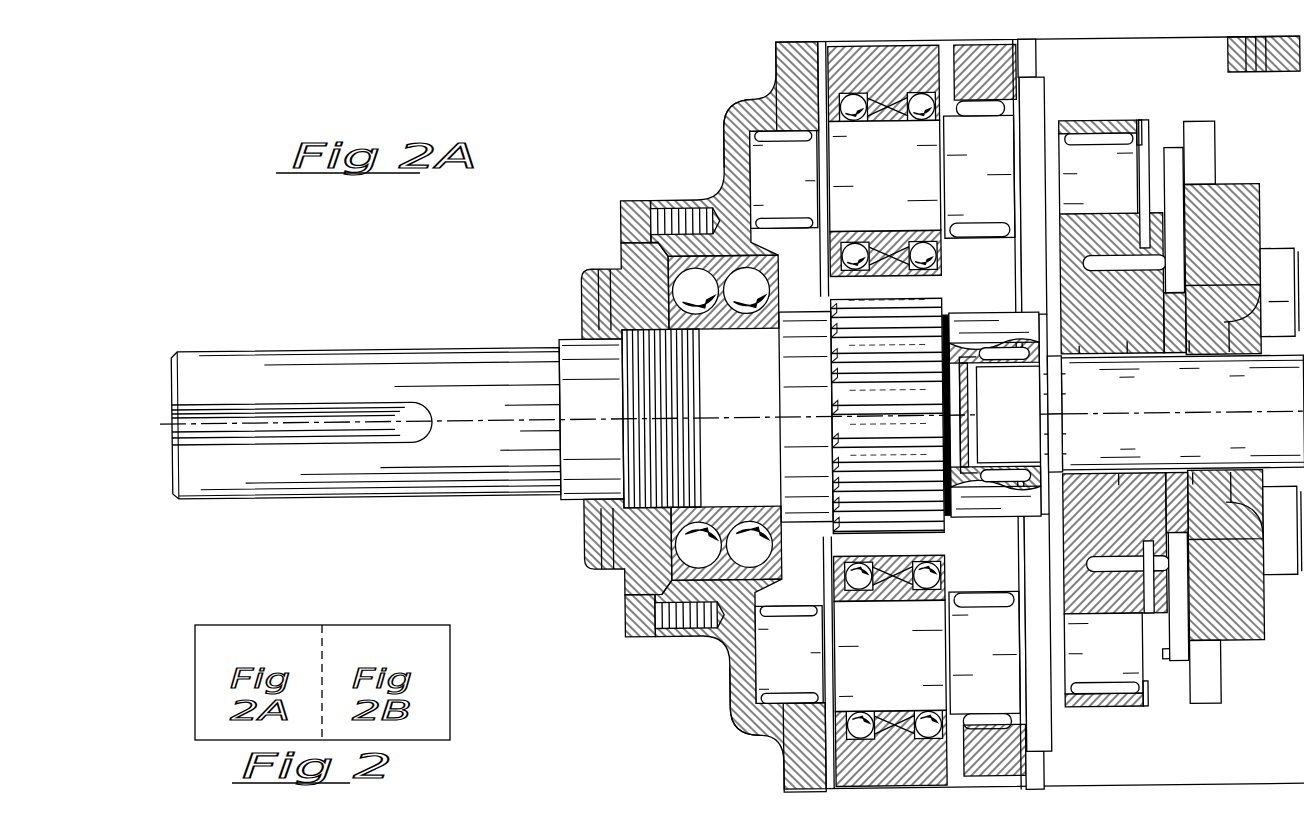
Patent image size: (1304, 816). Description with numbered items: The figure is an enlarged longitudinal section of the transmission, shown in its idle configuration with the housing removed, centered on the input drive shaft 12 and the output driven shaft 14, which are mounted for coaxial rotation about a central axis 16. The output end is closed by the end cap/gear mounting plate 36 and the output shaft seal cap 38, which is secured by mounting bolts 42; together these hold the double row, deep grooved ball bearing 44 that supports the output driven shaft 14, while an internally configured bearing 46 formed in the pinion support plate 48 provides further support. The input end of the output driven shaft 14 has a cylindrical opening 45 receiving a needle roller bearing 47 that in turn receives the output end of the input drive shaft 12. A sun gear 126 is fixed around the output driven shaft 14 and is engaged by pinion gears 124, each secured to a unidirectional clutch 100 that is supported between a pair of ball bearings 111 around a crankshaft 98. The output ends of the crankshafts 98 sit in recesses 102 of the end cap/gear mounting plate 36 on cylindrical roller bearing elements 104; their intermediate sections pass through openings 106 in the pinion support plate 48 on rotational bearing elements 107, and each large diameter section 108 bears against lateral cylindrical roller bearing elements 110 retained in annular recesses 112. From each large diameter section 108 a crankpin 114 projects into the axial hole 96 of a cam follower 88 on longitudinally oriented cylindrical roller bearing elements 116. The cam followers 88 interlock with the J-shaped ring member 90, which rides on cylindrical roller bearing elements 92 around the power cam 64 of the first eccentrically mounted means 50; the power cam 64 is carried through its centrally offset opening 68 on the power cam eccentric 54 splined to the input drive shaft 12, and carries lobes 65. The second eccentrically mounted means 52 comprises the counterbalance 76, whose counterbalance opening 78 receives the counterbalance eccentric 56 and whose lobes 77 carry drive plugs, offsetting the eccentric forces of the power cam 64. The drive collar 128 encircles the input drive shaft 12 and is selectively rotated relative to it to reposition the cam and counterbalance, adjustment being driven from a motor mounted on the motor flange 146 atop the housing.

The input drive shaft 12 is at (1140, 413).
The output driven shaft 14 is at (436, 412).
The central axis 16 is at (329, 431).
The end cap/gear mounting plate 36 is at (976, 413).
The output shaft seal cap 38 is at (605, 418).
The mounting bolts 42 is at (655, 409).
The double row, deep grooved ball bearing 44 is at (725, 417).
The cylindrical opening 45 is at (987, 414).
The internally configured bearing 46 is at (995, 413).
The needle roller bearing 47 is at (1023, 414).
The pinion support plate 48 is at (1003, 340).
The first eccentrically mounted means 50 is at (1186, 698).
The second eccentrically mounted means 52 is at (1287, 666).
The power cam eccentric 54 is at (1139, 413).
The counterbalance eccentric 56 is at (1233, 412).
The power cam 64 is at (1197, 412).
The lobes 65 is at (1176, 397).
The centrally offset opening 68 is at (1132, 413).
The counterbalance 76 is at (1243, 395).
The lobes 77 is at (1224, 397).
The counterbalance opening 78 is at (1276, 411).
The cam followers 88 is at (1111, 412).
The ring member 90 is at (1158, 386).
The cylindrical roller bearing elements 92 is at (1125, 412).
The axial hole 96 is at (1157, 393).
The crankshafts 98 is at (885, 415).
The unidirectional clutches 100 is at (887, 415).
The recesses 102 is at (718, 417).
The cylindrical roller bearing elements 104 is at (794, 417).
The openings 106 is at (979, 414).
The rotational bearing elements 107 is at (991, 414).
The large diameter section 108 is at (1063, 413).
The laterally oriented cylindrical roller bearing elements 110 is at (1060, 407).
The ball bearings 111 is at (896, 415).
The annular recesses 112 is at (1057, 414).
The crankpin 114 is at (1101, 413).
The longitudinally oriented cylindrical roller bearing elements 116 is at (1106, 413).
The pinion gears 124 is at (774, 417).
The sun gear 126 is at (865, 416).
The drive collar 128 is at (1284, 282).
The motor flange 146 is at (1235, 54).